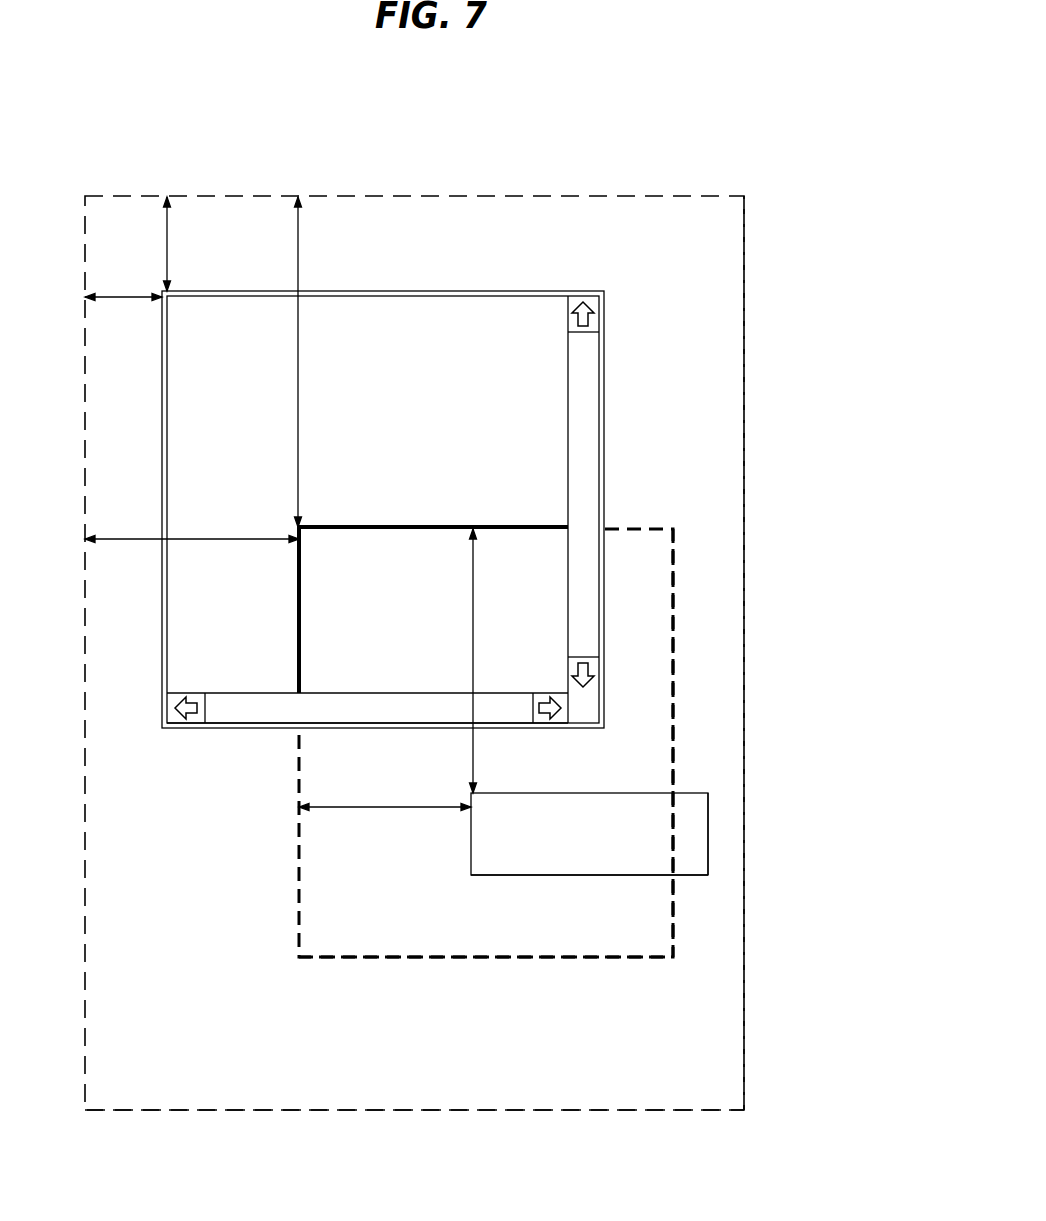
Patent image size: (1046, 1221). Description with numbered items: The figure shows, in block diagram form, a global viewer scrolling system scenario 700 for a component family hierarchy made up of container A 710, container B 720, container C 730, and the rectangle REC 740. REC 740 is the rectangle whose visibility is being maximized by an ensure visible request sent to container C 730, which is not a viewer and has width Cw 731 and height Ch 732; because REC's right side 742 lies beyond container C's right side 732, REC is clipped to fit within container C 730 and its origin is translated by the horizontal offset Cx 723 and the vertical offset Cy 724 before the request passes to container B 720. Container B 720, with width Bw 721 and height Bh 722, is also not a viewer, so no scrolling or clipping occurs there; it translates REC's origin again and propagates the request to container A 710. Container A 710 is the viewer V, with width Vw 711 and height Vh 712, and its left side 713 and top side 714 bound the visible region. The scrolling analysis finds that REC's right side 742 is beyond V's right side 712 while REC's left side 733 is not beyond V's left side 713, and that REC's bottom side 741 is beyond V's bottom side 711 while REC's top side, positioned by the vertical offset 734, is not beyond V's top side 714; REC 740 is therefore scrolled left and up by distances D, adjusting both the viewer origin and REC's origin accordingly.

The global viewer scrolling system scenario 700 is at (680, 136).
The container A 710 is at (383, 509).
The viewer width Vw 711 is at (222, 730).
The viewer height Vh 712 is at (604, 398).
The viewer left side 713 is at (131, 296).
The viewer top side 714 is at (168, 224).
The container B 720 is at (414, 653).
The container B width Bw 721 is at (455, 1112).
The container B height Bh 722 is at (744, 491).
The container C x offset Cx 723 is at (259, 542).
The container C y offset Cy 724 is at (300, 488).
The container C 730 is at (486, 742).
The container C width Cw 731 is at (473, 960).
The container C height Ch 732 is at (674, 668).
The REC left side 733 is at (331, 809).
The record y offset RECy 734 is at (476, 563).
The REC 740 is at (589, 834).
The REC bottom side 741 is at (511, 876).
The REC right side 742 is at (786, 820).